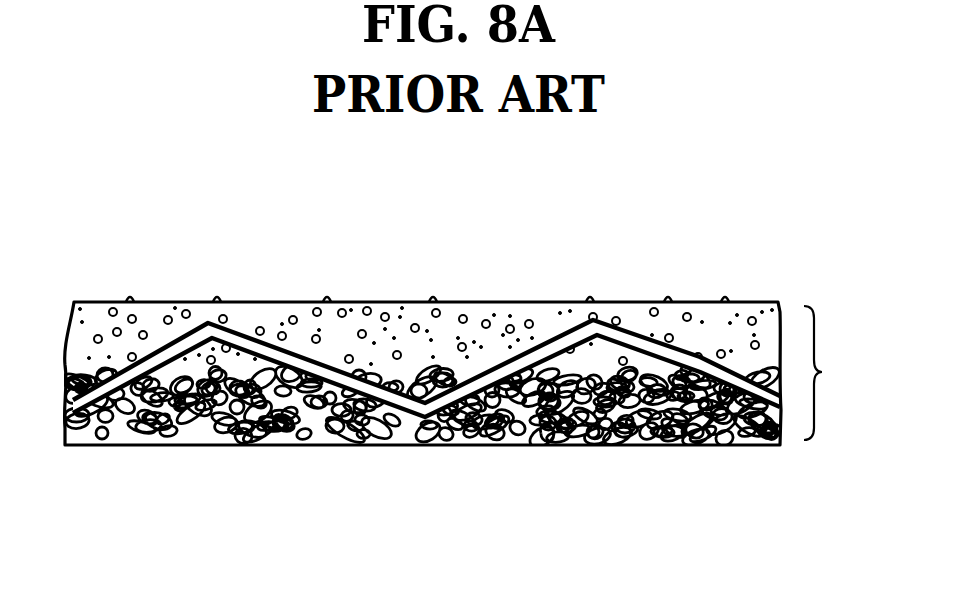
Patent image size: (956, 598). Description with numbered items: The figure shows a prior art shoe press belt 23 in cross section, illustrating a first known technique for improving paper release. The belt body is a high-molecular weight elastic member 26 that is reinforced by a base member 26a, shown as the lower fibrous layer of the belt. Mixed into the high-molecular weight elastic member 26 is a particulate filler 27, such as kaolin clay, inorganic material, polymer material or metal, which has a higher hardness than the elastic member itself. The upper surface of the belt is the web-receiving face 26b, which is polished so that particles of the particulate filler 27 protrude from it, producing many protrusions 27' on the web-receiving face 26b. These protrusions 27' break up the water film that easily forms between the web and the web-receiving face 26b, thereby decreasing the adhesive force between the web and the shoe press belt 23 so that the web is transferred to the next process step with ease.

The shoe press belt 23 is at (750, 303).
The high-molecular weight elastic member 26 is at (839, 373).
The base member 26a is at (617, 442).
The web-receiving face 26b is at (507, 300).
The particulate filler 27 is at (427, 269).
The protrusions 27' is at (426, 321).